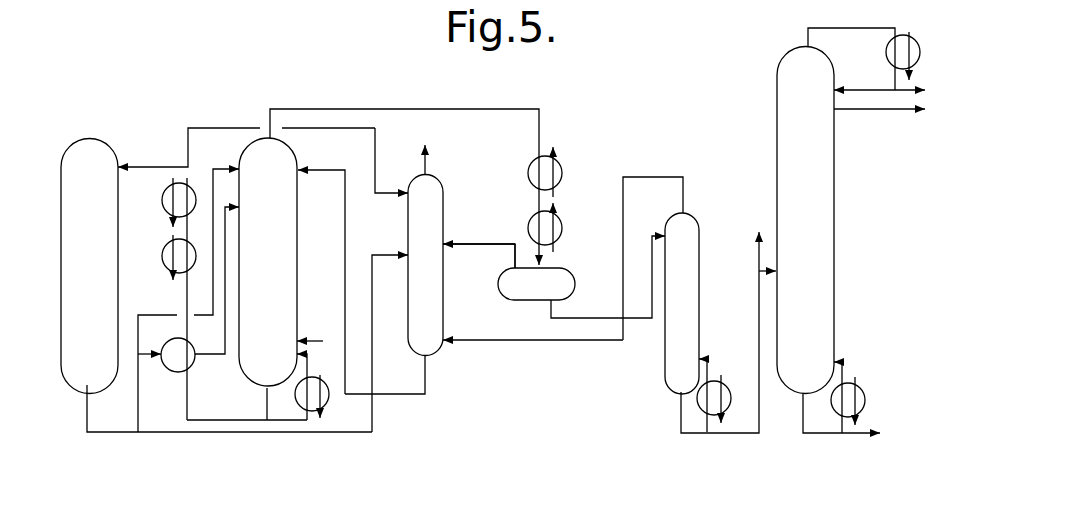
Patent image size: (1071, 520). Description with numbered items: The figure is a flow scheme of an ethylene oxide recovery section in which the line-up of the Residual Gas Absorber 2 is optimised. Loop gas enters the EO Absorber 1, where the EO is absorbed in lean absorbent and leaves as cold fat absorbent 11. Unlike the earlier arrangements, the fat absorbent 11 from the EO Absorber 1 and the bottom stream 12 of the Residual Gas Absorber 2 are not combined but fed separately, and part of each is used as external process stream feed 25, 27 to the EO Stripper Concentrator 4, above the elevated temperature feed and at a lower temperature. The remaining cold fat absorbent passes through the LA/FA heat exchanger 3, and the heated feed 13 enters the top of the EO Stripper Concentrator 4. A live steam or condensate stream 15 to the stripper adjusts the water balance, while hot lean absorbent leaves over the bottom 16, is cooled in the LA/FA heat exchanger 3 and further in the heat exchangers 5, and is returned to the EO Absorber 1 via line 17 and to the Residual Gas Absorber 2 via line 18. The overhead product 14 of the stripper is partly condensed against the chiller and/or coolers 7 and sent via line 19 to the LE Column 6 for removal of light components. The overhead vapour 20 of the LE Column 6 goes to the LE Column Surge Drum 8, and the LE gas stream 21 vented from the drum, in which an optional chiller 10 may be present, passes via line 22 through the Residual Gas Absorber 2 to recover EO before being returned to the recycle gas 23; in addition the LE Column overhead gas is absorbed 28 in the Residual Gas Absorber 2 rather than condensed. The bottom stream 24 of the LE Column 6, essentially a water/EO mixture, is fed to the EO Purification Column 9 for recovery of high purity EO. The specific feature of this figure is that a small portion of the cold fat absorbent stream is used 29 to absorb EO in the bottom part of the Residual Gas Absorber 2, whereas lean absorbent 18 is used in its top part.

The EO Absorber 1 is at (82, 160).
The Residual Gas Absorber 2 is at (425, 285).
The LA/FA heat exchanger 3 is at (176, 360).
The EO Stripper Concentrator 4 is at (278, 254).
The heat exchangers 5 is at (167, 254).
The LE Column 6 is at (688, 303).
The chiller and/or coolers 7 is at (557, 228).
The LE Column Surge Drum 8 is at (566, 285).
The EO Purification Column 9 is at (807, 231).
The chiller 10 is at (492, 244).
The fat absorbent 11 is at (87, 410).
The bottom stream 12 is at (422, 370).
The heated FA feed 13 is at (234, 206).
The overhead product 14 is at (270, 109).
The live steam or condensate stream 15 is at (313, 340).
The bottom stream of hot LA 16 is at (267, 402).
The line 17 is at (143, 167).
The lean absorbent line 18 is at (393, 192).
The line 19 is at (660, 236).
The overhead vapour 20 is at (683, 195).
The LE gas stream 21 is at (524, 263).
The line 22 is at (455, 245).
The recycle gas 23 is at (427, 160).
The bottom stream 24 is at (680, 416).
The external process stream feed 25 is at (232, 168).
The external process stream feed 27 is at (318, 170).
The absorbed overhead gas line 28 is at (455, 344).
The cold FA portion 29 is at (397, 255).